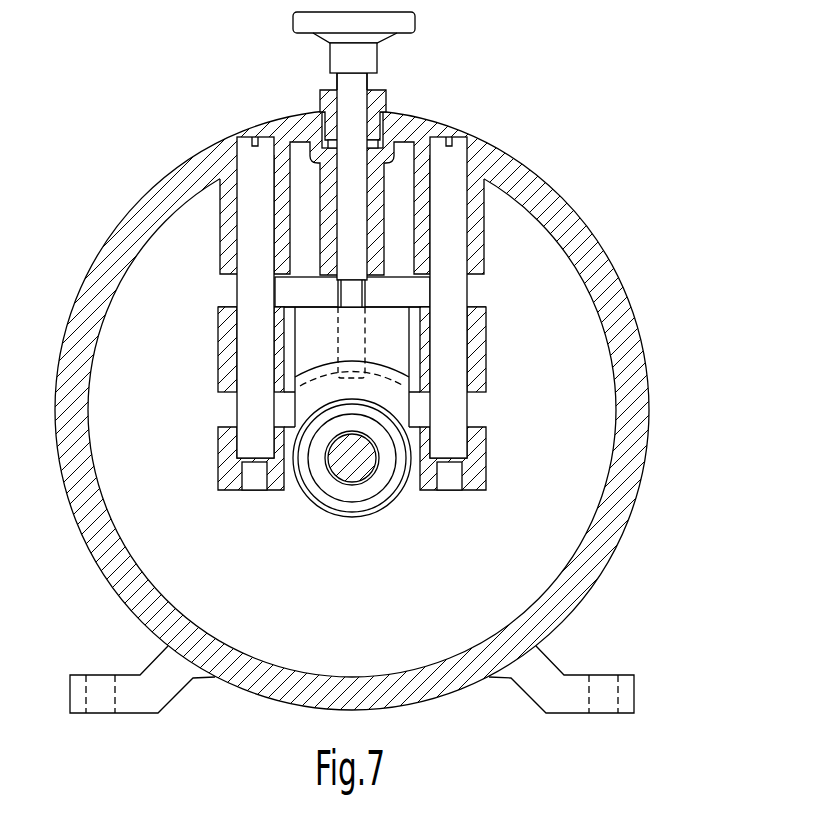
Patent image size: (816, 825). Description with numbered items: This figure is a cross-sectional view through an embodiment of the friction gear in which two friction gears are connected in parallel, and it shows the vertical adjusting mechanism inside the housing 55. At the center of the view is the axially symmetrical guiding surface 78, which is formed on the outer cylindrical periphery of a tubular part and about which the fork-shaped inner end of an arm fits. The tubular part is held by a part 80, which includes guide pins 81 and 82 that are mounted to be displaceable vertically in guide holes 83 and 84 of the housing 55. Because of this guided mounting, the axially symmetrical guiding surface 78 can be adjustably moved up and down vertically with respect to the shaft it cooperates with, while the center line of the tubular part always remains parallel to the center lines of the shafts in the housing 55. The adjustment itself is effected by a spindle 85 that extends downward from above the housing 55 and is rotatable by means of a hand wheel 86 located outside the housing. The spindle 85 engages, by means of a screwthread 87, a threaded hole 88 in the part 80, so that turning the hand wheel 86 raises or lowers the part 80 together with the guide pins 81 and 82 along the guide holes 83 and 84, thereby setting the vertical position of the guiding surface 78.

The housing 55 is at (523, 171).
The axially symmetrical guiding surface 78 is at (383, 508).
The part 80 is at (314, 333).
The guide pin 81 is at (463, 287).
The guide pin 82 is at (238, 288).
The guide hole 83 is at (444, 128).
The guide hole 84 is at (260, 128).
The spindle 85 is at (362, 228).
The hand wheel 86 is at (409, 33).
The screwthread 87 is at (366, 302).
The threaded hole 88 is at (366, 359).